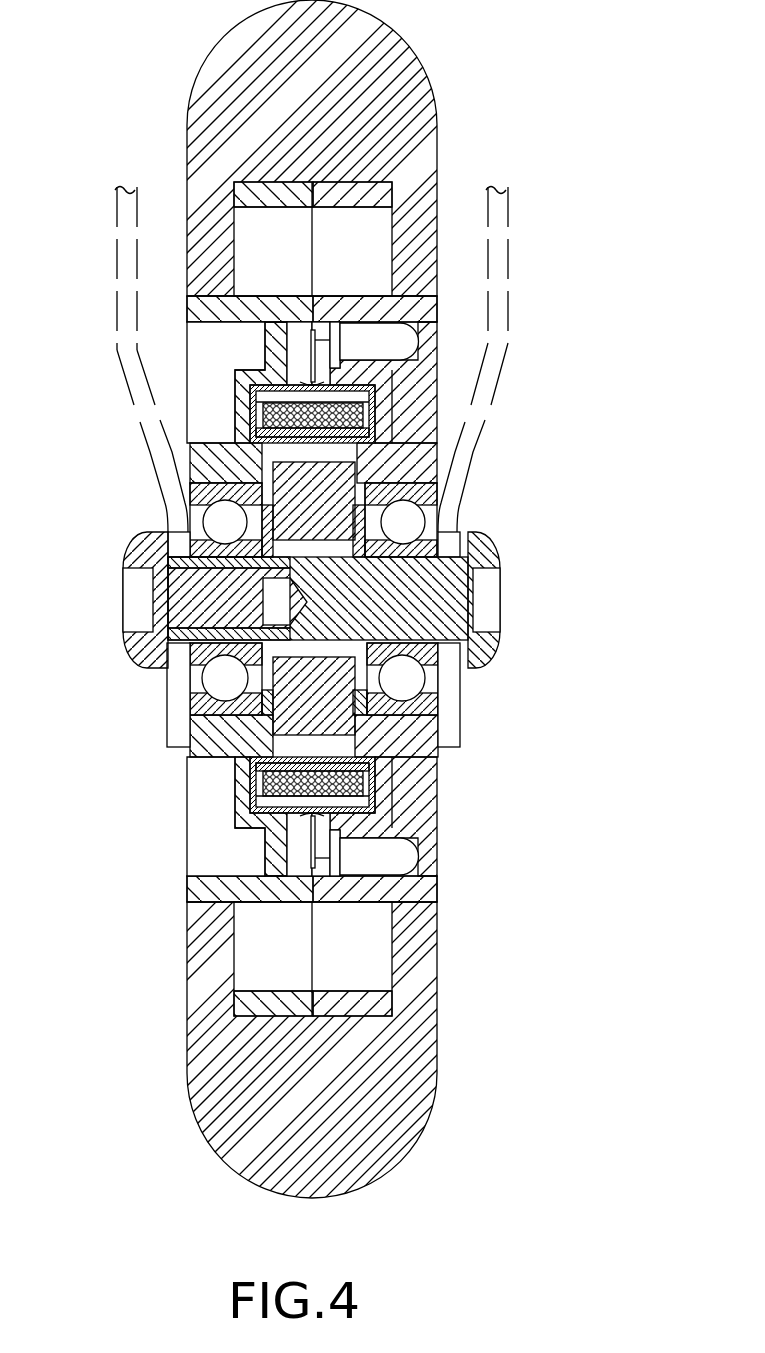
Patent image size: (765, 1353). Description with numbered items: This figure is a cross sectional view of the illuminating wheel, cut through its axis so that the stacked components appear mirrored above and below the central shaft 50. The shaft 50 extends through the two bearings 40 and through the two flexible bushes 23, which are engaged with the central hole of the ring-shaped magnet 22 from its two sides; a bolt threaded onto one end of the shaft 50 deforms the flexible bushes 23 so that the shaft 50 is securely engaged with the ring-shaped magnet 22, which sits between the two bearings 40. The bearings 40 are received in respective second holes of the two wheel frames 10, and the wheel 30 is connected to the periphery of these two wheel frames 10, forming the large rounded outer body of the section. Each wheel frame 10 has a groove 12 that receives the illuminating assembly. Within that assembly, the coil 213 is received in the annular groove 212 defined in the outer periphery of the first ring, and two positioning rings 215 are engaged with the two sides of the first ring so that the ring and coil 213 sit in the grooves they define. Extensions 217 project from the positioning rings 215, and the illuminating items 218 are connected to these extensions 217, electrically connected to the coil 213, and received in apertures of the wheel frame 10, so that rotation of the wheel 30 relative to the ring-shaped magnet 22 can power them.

The wheel frame 10 is at (384, 599).
The groove 12 is at (438, 354).
The ring-shaped magnet 22 is at (419, 598).
The flexible bush 23 is at (383, 596).
The wheel 30 is at (356, 600).
The bearing 40 is at (356, 600).
The shaft 50 is at (360, 609).
The annular groove 212 is at (426, 421).
The coil 213 is at (401, 785).
The positioning ring 215 is at (216, 420).
The extension 217 is at (193, 356).
The illuminating item 218 is at (459, 845).